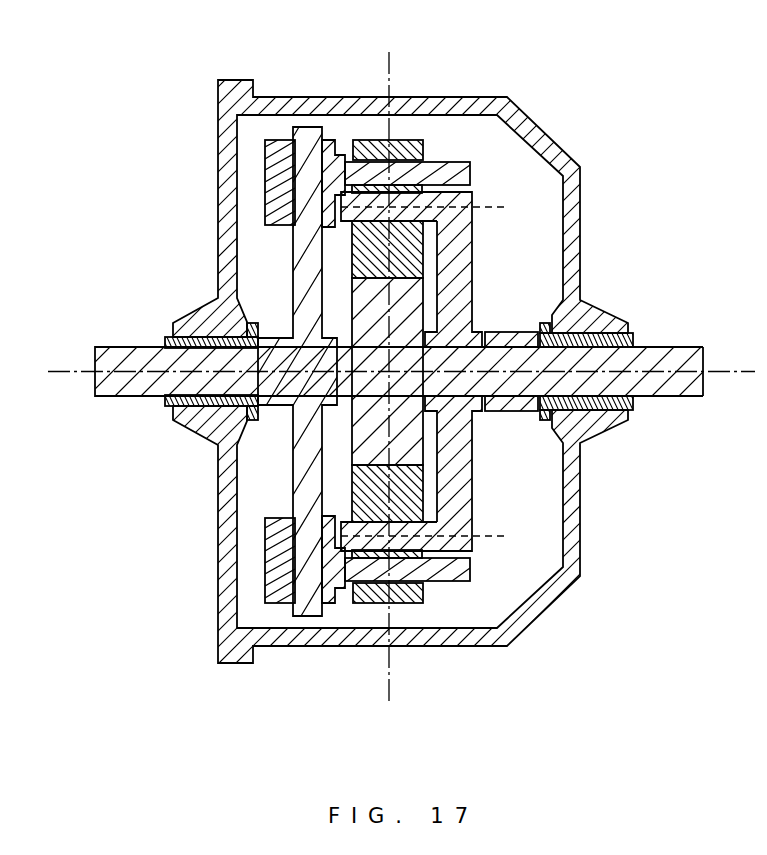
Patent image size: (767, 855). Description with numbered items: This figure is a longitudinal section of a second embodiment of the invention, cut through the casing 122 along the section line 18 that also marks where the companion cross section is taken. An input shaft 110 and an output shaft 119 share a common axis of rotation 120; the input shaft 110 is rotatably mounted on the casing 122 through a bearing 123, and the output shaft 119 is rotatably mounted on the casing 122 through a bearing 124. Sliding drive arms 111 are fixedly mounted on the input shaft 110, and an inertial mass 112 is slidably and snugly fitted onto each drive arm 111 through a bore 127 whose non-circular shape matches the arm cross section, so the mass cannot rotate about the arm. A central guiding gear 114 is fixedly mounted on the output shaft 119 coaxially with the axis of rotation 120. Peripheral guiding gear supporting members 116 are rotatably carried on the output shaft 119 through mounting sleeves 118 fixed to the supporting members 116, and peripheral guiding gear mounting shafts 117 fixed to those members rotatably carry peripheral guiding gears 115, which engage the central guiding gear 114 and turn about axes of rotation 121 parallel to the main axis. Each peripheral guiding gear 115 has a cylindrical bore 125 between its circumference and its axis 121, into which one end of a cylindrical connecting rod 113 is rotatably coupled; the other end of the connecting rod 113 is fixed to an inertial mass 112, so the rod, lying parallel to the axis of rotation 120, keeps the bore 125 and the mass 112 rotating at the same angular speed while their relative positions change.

The section line 18— 18 is at (401, 379).
The input shaft 110 is at (94, 362).
The sliding drive arm 111 is at (292, 312).
The inertial mass 112 is at (278, 137).
The cylindrical connecting rod 113 is at (470, 177).
The central guiding gear 114 is at (413, 434).
The peripheral guiding gear 115 is at (425, 246).
The peripheral guiding gear supporting member 116 is at (460, 275).
The peripheral guiding gear mounting shaft 117 is at (343, 222).
The peripheral guiding gear supporting member mounting sleeve 118 is at (527, 330).
The output shaft 119 is at (712, 336).
The axis of rotation 120 is at (68, 374).
The axis of rotation of peripheral guiding gear 121 is at (487, 204).
The casing 122 is at (547, 134).
The bearing 123 is at (163, 340).
The bearing 124 is at (638, 333).
The cylindrical bore 125 is at (423, 158).
The bore 127 is at (340, 138).